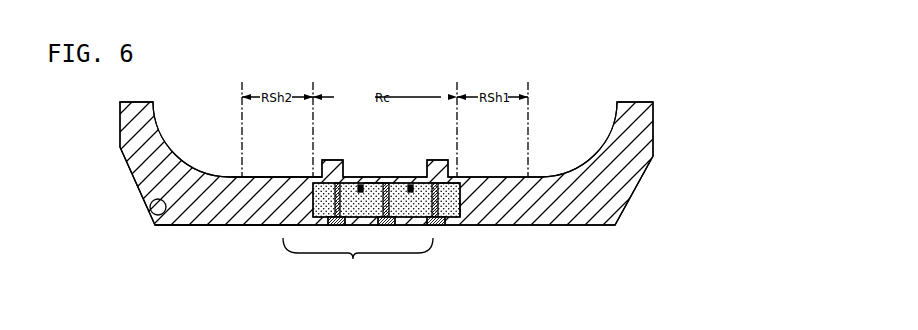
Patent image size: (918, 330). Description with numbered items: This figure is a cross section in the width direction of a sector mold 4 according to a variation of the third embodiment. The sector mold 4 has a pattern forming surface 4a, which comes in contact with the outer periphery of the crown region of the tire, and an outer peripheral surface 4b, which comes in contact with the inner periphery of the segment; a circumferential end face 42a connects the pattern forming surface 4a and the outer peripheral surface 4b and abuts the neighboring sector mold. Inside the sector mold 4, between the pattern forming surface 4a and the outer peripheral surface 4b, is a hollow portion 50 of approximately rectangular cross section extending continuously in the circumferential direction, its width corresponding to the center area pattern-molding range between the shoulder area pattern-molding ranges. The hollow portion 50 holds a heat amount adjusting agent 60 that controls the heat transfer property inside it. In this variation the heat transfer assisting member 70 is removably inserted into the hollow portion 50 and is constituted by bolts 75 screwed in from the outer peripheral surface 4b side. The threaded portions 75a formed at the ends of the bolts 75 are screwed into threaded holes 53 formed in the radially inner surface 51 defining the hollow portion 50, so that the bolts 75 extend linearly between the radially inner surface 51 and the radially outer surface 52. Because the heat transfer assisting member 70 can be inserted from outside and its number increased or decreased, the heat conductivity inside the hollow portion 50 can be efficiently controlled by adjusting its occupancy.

The sector mold 4 is at (390, 64).
The pattern forming surface 4a is at (292, 178).
The outer peripheral surface 4b is at (190, 226).
The end face 42a is at (152, 214).
The hollow portion 50 is at (388, 185).
The radially inner surface 51 is at (460, 186).
The radially outer surface 52 is at (460, 212).
The threaded holes 53 is at (411, 187).
The heat amount adjusting agent 60 is at (382, 184).
The heat transfer assisting member 70 is at (358, 255).
The bolts 75 is at (327, 223).
The threaded portions 75a is at (339, 185).